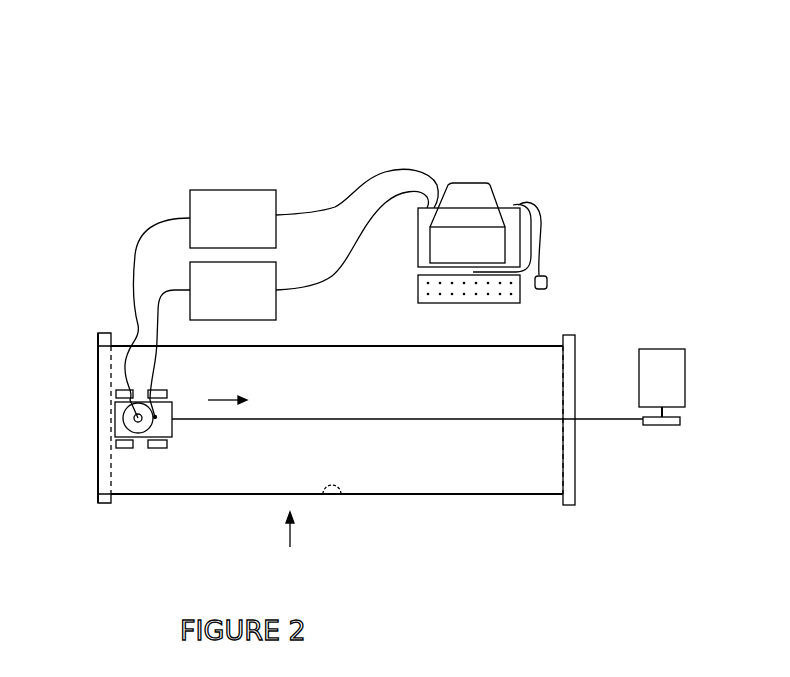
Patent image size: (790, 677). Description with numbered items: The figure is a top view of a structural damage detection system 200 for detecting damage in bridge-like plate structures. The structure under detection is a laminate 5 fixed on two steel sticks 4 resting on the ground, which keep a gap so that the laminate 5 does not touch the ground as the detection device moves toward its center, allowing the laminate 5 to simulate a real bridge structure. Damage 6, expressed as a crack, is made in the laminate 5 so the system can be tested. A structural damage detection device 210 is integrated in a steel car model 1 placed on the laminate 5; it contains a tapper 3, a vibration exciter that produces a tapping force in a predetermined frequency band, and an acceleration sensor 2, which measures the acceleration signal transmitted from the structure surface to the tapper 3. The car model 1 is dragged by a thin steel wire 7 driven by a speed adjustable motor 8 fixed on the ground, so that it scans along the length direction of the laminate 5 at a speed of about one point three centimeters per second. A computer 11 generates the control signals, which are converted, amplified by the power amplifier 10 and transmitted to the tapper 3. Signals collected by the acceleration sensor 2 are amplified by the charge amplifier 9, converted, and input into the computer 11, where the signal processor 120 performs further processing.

The structural damage detection system 200 is at (378, 299).
The steel car model 1 is at (98, 417).
The acceleration sensor 2 is at (101, 469).
The tapper 3 is at (101, 367).
The structural damage detection device 210 is at (112, 417).
The steel sticks 4 is at (135, 456).
The laminate 5 is at (343, 457).
The damage 6 is at (358, 531).
The thin steel wire 7 is at (407, 498).
The speed adjustable motor 8 is at (685, 397).
The charge amplifier 9 is at (233, 189).
The power amplifier 10 is at (257, 225).
The computer 11 is at (524, 216).
The signal processor 120 is at (487, 248).